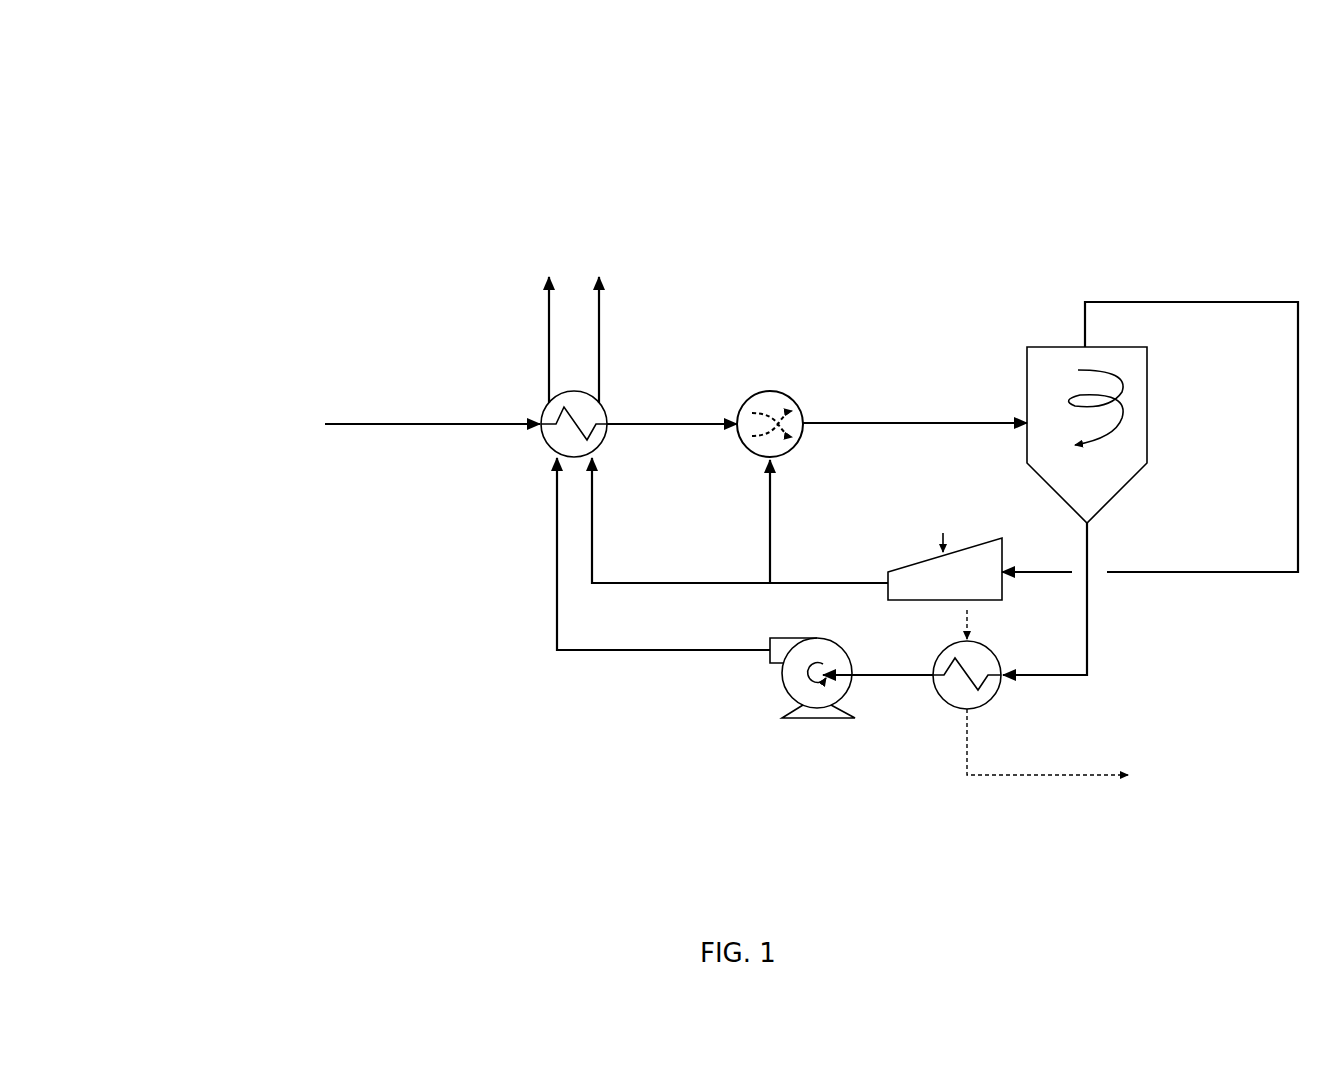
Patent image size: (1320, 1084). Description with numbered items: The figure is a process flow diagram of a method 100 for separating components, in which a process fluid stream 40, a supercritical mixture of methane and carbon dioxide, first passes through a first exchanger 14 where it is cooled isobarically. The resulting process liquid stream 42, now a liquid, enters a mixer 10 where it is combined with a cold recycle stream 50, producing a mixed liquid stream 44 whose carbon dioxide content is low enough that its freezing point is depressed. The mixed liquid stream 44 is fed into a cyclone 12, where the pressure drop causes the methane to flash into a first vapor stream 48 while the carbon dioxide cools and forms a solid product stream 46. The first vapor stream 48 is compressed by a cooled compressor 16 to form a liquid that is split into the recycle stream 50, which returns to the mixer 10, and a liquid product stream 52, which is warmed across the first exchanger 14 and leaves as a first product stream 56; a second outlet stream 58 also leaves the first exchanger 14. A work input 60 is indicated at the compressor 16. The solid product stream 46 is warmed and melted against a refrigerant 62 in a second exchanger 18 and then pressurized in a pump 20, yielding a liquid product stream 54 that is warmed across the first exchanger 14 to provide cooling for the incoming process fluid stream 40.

The method for separating components 100 is at (205, 118).
The mixer 10 is at (756, 398).
The cyclone 12 is at (1030, 355).
The first exchanger 14 is at (540, 410).
The cooled compressor 16 is at (907, 573).
The second exchanger 18 is at (993, 697).
The pump 20 is at (790, 718).
The process fluid stream 40 is at (413, 426).
The process liquid stream 42 is at (672, 409).
The mixed liquid stream 44 is at (915, 409).
The solid product stream 46 is at (1065, 599).
The first vapor stream 48 is at (1150, 421).
The recycle stream 50 is at (748, 521).
The liquid product stream 52 is at (740, 520).
The liquid product stream 54 is at (663, 554).
The first product stream 56 is at (598, 325).
The heat exchanger outlet stream 58 is at (547, 325).
The compressor work input 60 is at (961, 524).
The refrigerant 62 is at (1028, 691).